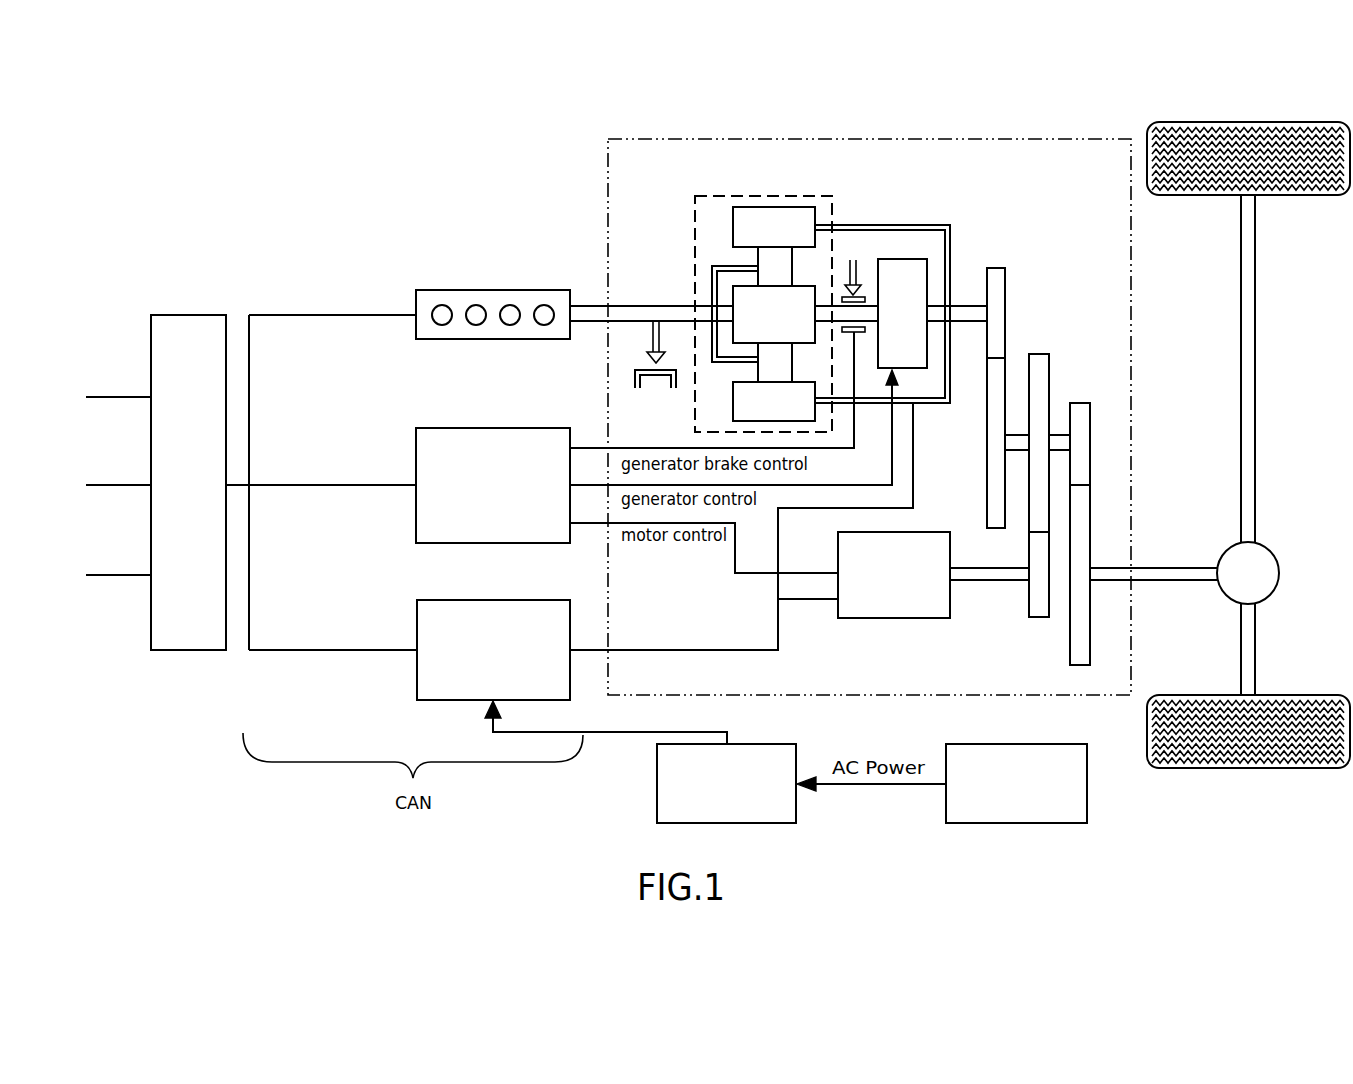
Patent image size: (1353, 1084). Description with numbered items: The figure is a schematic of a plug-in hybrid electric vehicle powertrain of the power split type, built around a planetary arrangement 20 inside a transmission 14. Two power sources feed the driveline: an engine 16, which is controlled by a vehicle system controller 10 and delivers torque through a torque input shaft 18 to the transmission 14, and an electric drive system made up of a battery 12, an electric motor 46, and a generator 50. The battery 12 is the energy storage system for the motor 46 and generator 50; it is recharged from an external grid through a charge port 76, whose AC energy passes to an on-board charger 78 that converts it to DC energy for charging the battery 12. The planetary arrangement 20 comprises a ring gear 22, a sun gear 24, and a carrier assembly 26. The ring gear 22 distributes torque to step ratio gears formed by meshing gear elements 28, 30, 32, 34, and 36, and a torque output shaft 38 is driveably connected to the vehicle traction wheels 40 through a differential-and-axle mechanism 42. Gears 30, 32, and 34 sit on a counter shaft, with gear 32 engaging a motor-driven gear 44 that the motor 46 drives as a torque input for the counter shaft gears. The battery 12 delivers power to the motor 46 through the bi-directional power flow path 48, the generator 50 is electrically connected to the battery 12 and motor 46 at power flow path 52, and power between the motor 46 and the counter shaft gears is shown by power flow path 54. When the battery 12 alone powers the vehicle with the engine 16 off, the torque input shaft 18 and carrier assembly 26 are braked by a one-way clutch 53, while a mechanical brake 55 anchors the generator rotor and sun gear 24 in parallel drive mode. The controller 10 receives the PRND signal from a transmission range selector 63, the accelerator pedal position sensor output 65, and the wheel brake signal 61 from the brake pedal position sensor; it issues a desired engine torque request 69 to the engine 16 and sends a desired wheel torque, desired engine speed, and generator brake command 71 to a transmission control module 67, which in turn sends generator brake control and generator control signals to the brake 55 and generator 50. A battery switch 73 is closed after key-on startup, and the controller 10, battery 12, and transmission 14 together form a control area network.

The vehicle system controller 10 is at (187, 314).
The battery 12 is at (462, 700).
The transmission 14 is at (820, 695).
The engine 16 is at (455, 290).
The torque input shaft 18 is at (600, 306).
The planetary arrangement 20 is at (832, 206).
The ring gear 22 is at (733, 228).
The sun gear 24 is at (712, 298).
The carrier assembly 26 is at (712, 268).
The meshing gear element 28 is at (1006, 285).
The meshing gear element 30 is at (986, 492).
The meshing gear element 32 is at (1040, 354).
The meshing gear element 34 is at (1080, 403).
The meshing gear element 36 is at (1092, 515).
The torque output shaft 38 is at (1143, 565).
The vehicle traction wheels 40 is at (1272, 122).
The differential-and-axle mechanism 42 is at (1282, 573).
The motor-driven gear 44 is at (1037, 618).
The electric motor 46 is at (905, 618).
The power flow path 48 is at (658, 652).
The generator 50 is at (948, 268).
The power flow path 52 is at (790, 509).
The one-way clutch 53 is at (647, 342).
The power flow path 54 is at (793, 602).
The mechanical brake 55 is at (858, 272).
The wheel brake signal 61 is at (102, 576).
The transmission range selector 63 is at (102, 398).
The accelerator pedal position sensor output 65 is at (102, 486).
The transmission control module 67 is at (533, 428).
The desired engine torque request 69 is at (284, 316).
The desired wheel torque, desired engine speed, and generator brake command 71 is at (284, 486).
The battery switch 73 is at (284, 651).
The charge port 76 is at (1000, 823).
The on-board charger 78 is at (743, 823).